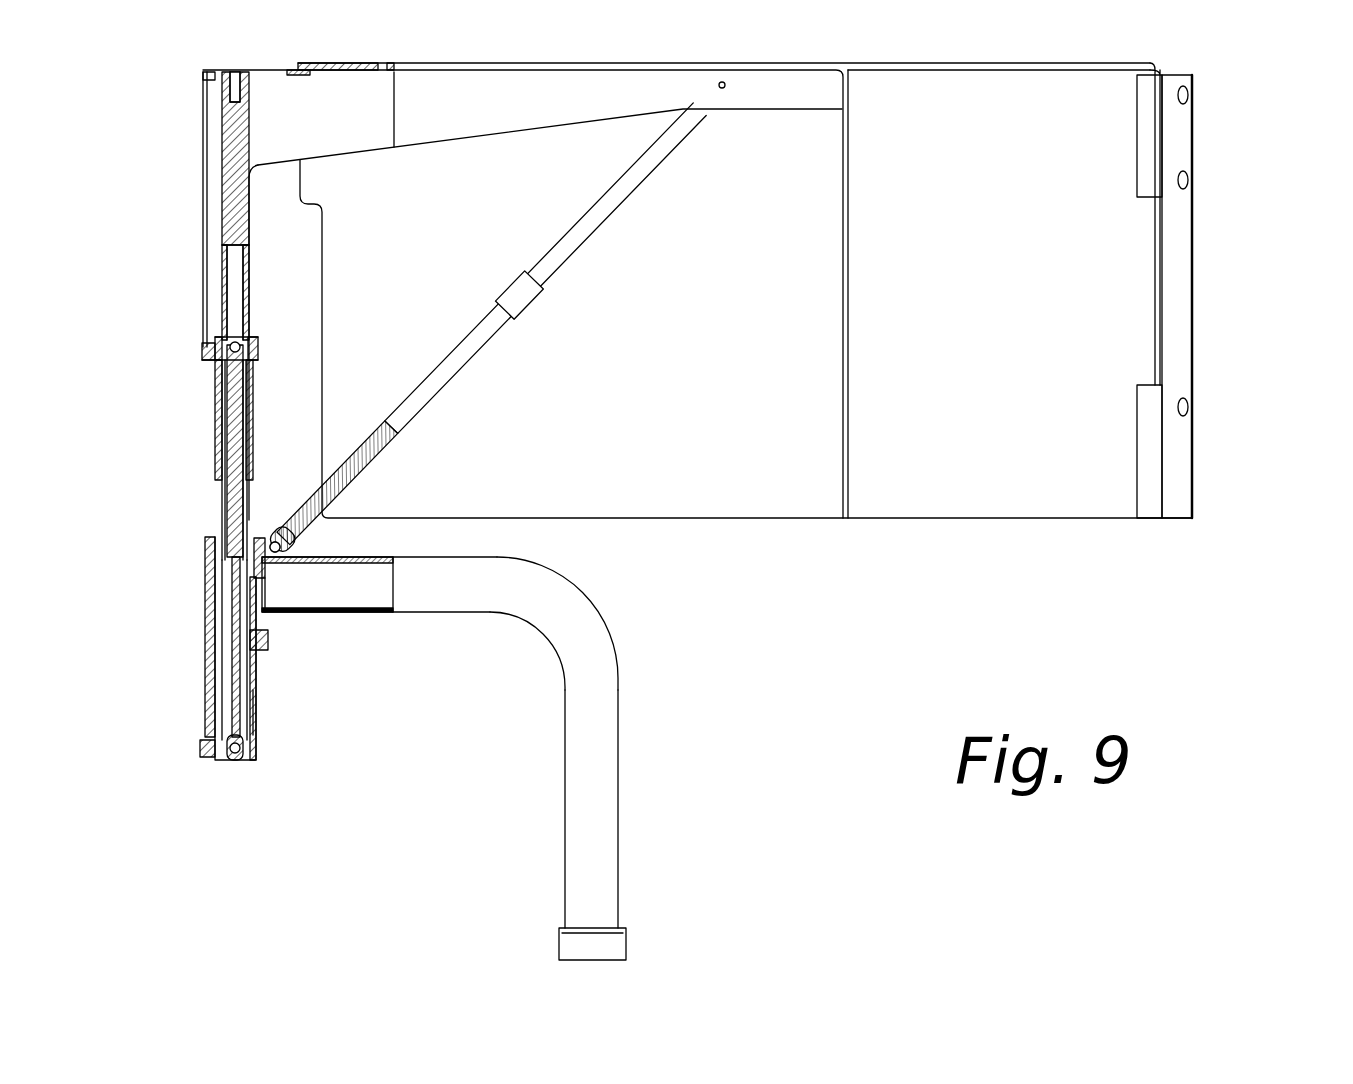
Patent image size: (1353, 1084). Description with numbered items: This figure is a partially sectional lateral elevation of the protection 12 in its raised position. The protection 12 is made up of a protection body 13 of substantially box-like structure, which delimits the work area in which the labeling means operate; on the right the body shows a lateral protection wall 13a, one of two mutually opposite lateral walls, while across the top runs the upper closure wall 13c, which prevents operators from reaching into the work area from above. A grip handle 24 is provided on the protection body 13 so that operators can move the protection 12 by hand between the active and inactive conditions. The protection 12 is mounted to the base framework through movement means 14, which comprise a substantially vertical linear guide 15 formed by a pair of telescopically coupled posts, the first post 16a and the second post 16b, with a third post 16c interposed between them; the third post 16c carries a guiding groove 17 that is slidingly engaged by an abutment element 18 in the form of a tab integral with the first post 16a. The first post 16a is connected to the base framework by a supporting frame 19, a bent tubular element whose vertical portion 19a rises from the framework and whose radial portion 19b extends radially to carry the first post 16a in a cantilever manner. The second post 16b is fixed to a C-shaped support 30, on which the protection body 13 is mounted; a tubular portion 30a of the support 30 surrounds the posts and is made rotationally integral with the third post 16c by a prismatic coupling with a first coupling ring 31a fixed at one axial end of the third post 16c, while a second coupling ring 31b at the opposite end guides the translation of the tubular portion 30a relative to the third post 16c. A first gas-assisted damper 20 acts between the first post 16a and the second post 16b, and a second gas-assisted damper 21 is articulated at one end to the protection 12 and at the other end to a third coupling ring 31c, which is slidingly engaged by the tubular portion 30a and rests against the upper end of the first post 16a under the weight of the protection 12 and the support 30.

The protection 12 is at (1242, 160).
The protection body 13 is at (1037, 57).
The lateral protection wall 13a is at (1090, 283).
The upper closure wall 13c is at (898, 63).
The movement means 14 is at (185, 265).
The linear guide 15 is at (195, 507).
The first post 16a is at (210, 672).
The second post 16b is at (228, 145).
The third post 16c is at (262, 705).
The guiding groove 17 is at (225, 630).
The abutment element 18 is at (266, 650).
The supporting frame 19 is at (620, 652).
The vertical portion 19a is at (598, 822).
The radial portion 19b is at (440, 600).
The first gas-assisted damper 20 is at (225, 455).
The second gas-assisted damper 21 is at (582, 255).
The grip handle 24 is at (1195, 370).
The support 30 is at (605, 88).
The tubular portion 30a is at (205, 315).
The first coupling ring 31a is at (265, 337).
The second coupling ring 31b is at (257, 768).
The third coupling ring 31c is at (270, 530).